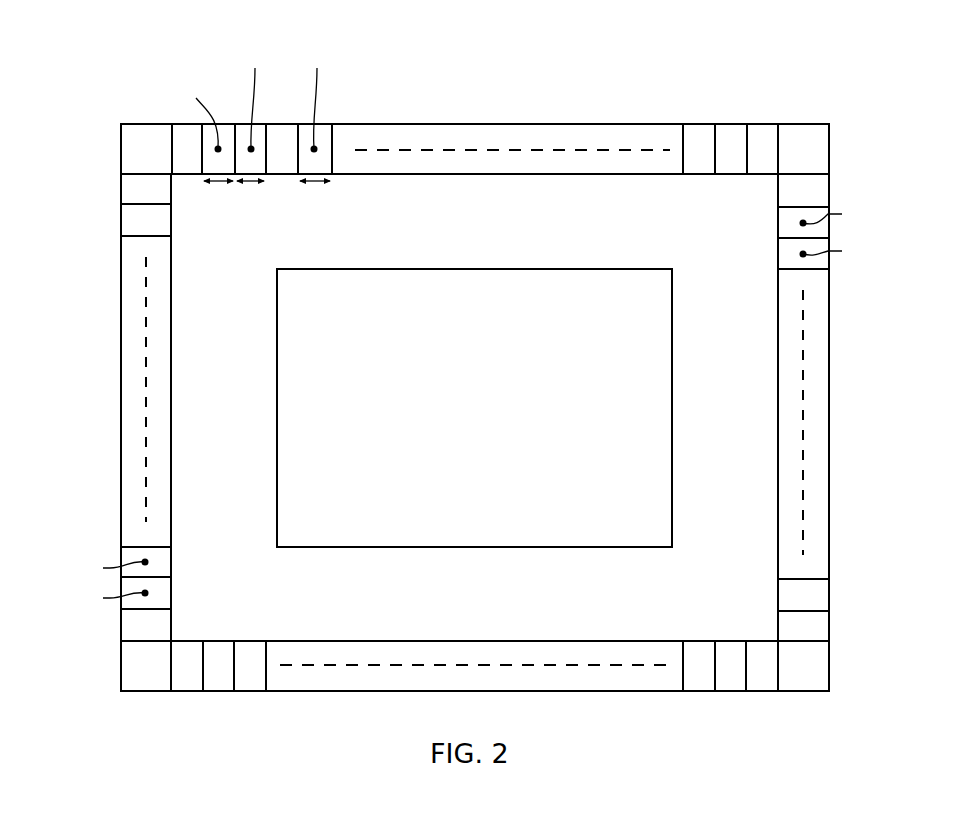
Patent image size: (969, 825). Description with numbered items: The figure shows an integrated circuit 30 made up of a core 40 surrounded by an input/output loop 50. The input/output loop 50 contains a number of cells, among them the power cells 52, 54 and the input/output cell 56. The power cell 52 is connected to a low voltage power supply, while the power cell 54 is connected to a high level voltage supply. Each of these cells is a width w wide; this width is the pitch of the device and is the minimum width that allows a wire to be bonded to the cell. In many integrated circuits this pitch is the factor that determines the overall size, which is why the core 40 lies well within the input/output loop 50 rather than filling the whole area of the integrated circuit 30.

The integrated circuit 30 is at (725, 64).
The core 40 is at (520, 268).
The input/output loop 50 is at (800, 125).
The power cell 52 is at (320, 38).
The power cell 54 is at (254, 38).
The input/output cell 56 is at (192, 62).